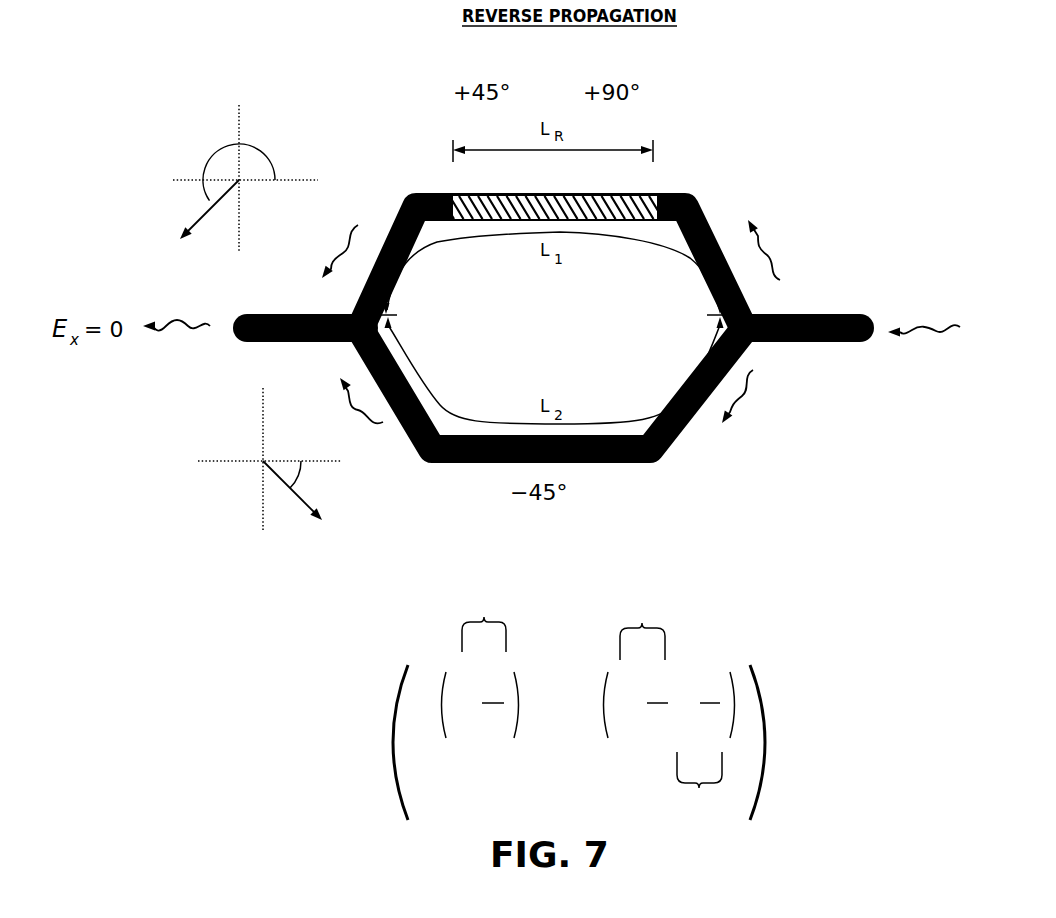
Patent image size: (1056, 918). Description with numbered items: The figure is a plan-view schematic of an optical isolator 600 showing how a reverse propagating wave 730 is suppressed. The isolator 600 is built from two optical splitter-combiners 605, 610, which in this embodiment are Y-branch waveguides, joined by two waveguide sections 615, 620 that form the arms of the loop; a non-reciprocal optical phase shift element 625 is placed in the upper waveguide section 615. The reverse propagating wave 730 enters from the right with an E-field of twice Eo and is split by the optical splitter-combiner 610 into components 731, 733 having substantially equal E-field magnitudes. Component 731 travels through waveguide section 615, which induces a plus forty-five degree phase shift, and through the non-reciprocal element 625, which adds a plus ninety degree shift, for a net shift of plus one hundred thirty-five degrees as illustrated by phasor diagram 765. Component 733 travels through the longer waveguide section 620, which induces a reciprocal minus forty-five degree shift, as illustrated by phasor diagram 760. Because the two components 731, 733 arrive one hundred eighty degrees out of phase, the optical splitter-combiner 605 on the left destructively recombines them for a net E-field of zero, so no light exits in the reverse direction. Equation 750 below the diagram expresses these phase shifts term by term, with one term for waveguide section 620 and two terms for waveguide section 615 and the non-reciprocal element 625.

The optical isolator 600 is at (250, 70).
The optical splitter-combiner 605 is at (253, 343).
The optical splitter-combiner 610 is at (800, 345).
The waveguide section 615 is at (436, 220).
The waveguide section 620 is at (592, 462).
The non-reciprocal optical phase shift element 625 is at (647, 194).
The reverse propagating wave 730 is at (940, 330).
The component 731 is at (358, 225).
The component 733 is at (383, 422).
The equation 750 is at (200, 682).
The phasor diagram 760 is at (208, 512).
The phasor diagram 765 is at (191, 120).